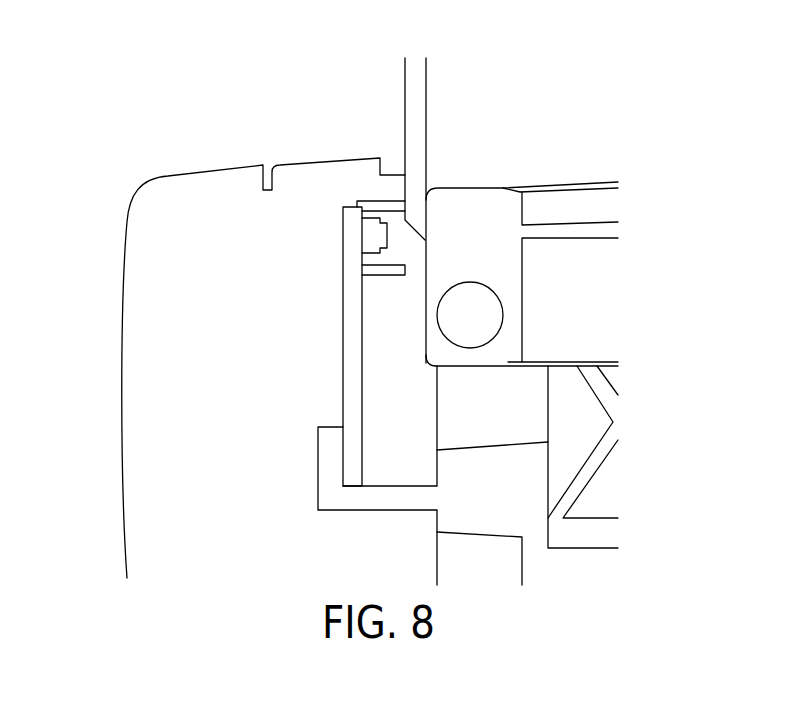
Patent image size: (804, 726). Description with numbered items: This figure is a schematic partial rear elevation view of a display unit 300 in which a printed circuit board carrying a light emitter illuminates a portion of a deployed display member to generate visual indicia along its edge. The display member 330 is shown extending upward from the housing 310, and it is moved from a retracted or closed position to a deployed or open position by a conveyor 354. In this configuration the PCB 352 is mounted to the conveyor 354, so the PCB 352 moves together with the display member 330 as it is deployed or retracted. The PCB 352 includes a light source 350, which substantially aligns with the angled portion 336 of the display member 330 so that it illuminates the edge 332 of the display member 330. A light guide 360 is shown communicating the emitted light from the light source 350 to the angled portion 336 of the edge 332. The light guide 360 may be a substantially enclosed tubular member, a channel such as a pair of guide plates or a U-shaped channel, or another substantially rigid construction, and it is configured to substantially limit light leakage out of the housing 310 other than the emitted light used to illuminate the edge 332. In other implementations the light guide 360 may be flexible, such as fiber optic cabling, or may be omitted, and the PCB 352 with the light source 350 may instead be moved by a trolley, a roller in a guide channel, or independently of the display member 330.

The display unit 300 is at (150, 139).
The housing 310 is at (121, 368).
The display member 330 is at (357, 135).
The edge 332 is at (405, 105).
The angled portion 336 is at (427, 232).
The light source 350 is at (362, 240).
The PCB 352 is at (343, 355).
The conveyor 354 is at (318, 455).
The light guide 360 is at (378, 275).